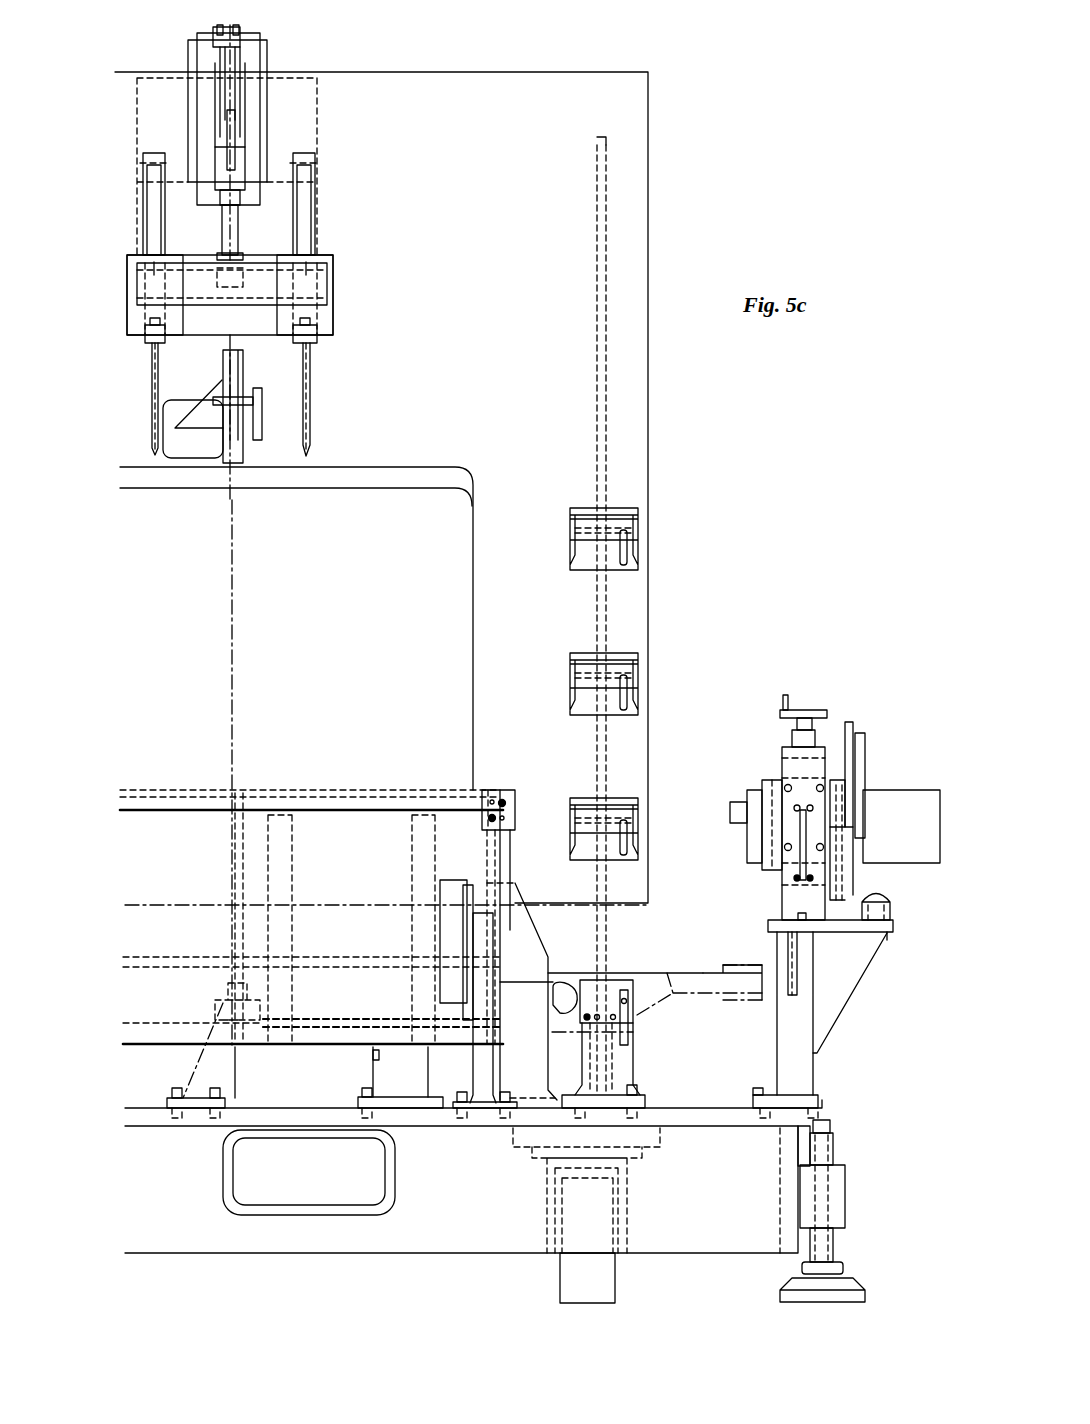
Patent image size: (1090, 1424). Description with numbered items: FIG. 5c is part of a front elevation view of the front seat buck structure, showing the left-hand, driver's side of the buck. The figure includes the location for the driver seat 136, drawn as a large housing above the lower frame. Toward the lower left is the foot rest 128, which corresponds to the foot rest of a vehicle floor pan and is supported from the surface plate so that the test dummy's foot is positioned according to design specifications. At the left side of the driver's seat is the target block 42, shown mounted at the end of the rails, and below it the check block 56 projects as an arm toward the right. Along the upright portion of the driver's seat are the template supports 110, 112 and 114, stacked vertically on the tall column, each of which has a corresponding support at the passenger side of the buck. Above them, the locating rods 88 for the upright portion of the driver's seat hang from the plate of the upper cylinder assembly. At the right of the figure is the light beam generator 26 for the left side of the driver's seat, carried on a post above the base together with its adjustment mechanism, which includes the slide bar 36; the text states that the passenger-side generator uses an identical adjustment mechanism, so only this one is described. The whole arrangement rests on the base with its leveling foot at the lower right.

The light beam generator 26 is at (900, 832).
The slide bar 36 is at (860, 777).
The target block 42 is at (515, 790).
The check block 56 is at (703, 975).
The locating rods 88 is at (312, 436).
The template support 110 is at (640, 818).
The template support 112 is at (640, 678).
The template support 114 is at (640, 540).
The foot rest 128 is at (138, 878).
The driver seat 136 is at (375, 683).